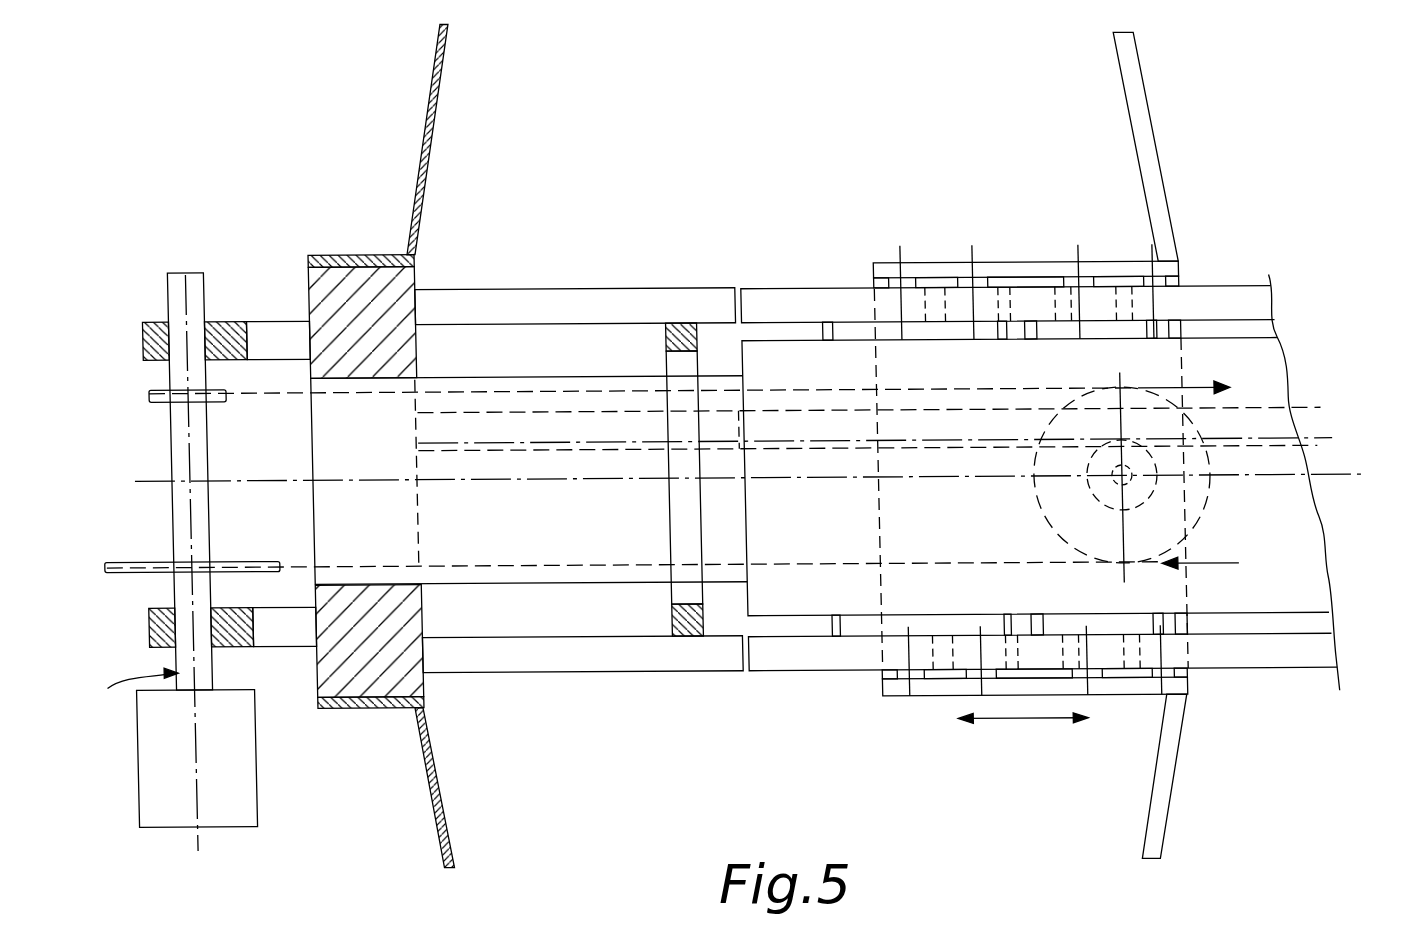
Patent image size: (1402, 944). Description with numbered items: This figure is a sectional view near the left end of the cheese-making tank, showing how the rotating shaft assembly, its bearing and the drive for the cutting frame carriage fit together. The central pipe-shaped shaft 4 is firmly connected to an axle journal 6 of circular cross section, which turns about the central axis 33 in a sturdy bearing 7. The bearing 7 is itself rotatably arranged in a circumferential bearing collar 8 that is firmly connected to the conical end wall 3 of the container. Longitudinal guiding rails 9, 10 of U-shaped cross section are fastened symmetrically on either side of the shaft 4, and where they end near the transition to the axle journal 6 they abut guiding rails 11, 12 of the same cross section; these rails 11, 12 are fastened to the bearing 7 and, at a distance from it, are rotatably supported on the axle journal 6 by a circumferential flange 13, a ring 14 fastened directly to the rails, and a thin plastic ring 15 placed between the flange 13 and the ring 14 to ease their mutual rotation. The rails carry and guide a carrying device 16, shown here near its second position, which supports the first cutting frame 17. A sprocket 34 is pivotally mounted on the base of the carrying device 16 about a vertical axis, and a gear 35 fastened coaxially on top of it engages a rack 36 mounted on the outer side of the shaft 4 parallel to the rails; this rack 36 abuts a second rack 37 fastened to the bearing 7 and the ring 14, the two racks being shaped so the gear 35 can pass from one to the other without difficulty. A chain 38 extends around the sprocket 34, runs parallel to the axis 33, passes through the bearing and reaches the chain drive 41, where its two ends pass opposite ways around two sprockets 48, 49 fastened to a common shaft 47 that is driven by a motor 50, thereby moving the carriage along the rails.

The end wall 3 is at (436, 110).
The shaft 4 is at (1280, 365).
The axle journal 6 is at (652, 578).
The bearing 7 is at (313, 290).
The bearing collar 8 is at (363, 253).
The guiding rail 9 is at (1272, 662).
The guiding rail 10 is at (1246, 304).
The guiding rail 11 is at (606, 655).
The guiding rail 12 is at (572, 299).
The circumferential flange 13 is at (688, 363).
The ring 14 is at (716, 625).
The plastic ring 15 is at (670, 349).
The carrying device 16 is at (1128, 685).
The first cutting frame 17 is at (1170, 767).
The central axis 33 is at (1306, 466).
The sprocket 34 is at (1197, 529).
The gear 35 is at (1150, 508).
The rack 36 is at (848, 405).
The rack 37 is at (505, 418).
The chain 38 is at (286, 391).
The chain drive 41 is at (120, 686).
The common shaft 47 is at (175, 504).
The sprocket 48 is at (154, 398).
The sprocket 49 is at (130, 571).
The motor 50 is at (240, 762).